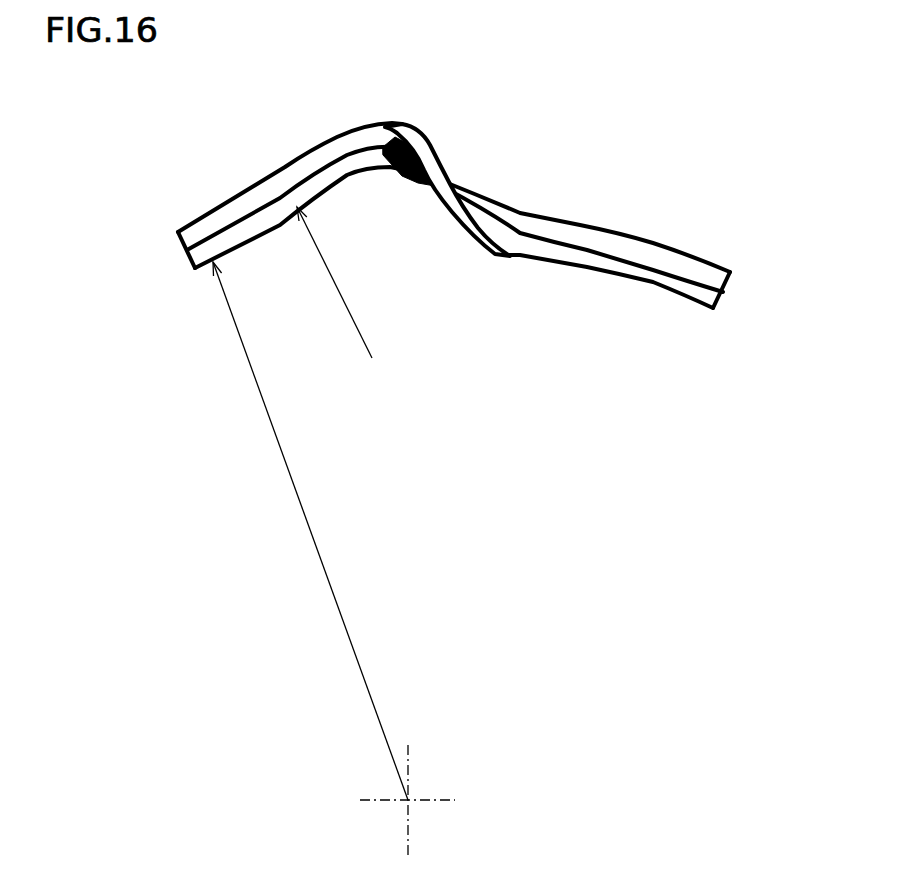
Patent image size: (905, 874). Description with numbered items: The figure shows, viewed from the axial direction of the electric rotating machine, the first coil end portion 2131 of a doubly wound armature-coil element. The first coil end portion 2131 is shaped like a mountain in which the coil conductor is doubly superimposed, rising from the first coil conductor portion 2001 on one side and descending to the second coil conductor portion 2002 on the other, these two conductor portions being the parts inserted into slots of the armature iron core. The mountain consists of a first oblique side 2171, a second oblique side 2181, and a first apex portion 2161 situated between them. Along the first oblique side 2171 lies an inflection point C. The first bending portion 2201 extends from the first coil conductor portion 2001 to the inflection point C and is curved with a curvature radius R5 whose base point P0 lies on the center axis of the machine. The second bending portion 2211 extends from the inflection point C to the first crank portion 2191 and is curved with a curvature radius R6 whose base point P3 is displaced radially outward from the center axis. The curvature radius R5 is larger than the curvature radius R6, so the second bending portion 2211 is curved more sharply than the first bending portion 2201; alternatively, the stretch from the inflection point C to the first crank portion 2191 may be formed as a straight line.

The first coil end portion 2131 is at (412, 184).
The first oblique side 2171 is at (248, 169).
The first apex portion 2161 is at (408, 126).
The second bending portion 2211 is at (248, 188).
The first bending portion 2201 is at (248, 195).
The first crank portion 2191 is at (384, 172).
The second oblique side 2181 is at (580, 225).
The first coil conductor portion 2001 is at (190, 258).
The second coil conductor portion 2002 is at (723, 308).
The inflection point C is at (221, 209).
The base point of curvature radius R5 P0 is at (409, 801).
The base point of curvature radius R6 P3 is at (395, 375).
The curvature radius of first bending portion R5 is at (310, 531).
The curvature radius of second bending portion R6 is at (331, 282).